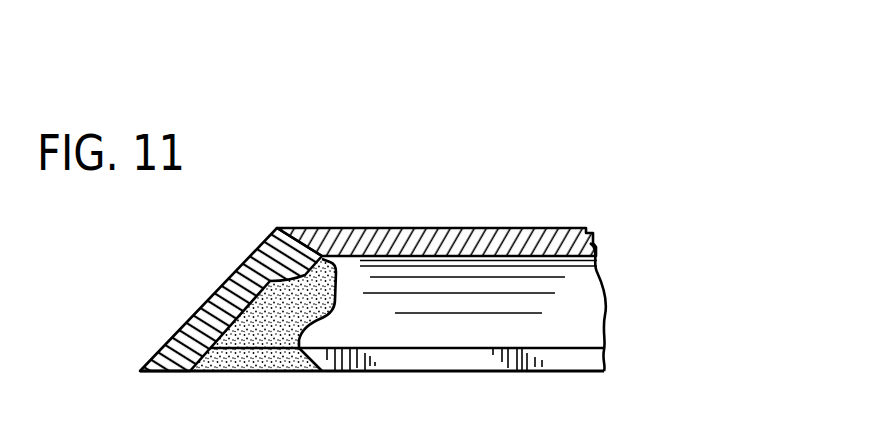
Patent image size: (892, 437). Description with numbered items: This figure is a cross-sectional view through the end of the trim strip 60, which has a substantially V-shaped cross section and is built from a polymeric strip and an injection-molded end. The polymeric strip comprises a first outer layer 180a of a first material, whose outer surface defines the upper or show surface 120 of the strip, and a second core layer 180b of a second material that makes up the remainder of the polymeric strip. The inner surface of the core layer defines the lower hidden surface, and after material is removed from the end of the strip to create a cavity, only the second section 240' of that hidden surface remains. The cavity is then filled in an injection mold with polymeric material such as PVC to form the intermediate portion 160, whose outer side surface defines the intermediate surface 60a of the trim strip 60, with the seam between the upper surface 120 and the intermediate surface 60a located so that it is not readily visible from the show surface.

The trim strip 60 is at (353, 246).
The intermediate surface 60a is at (200, 305).
The upper surface 120 is at (527, 228).
The first outer layer 180a is at (586, 229).
The second core layer 180b is at (596, 243).
The intermediate portion 160 is at (260, 360).
The second section of hidden surface 240' is at (425, 307).